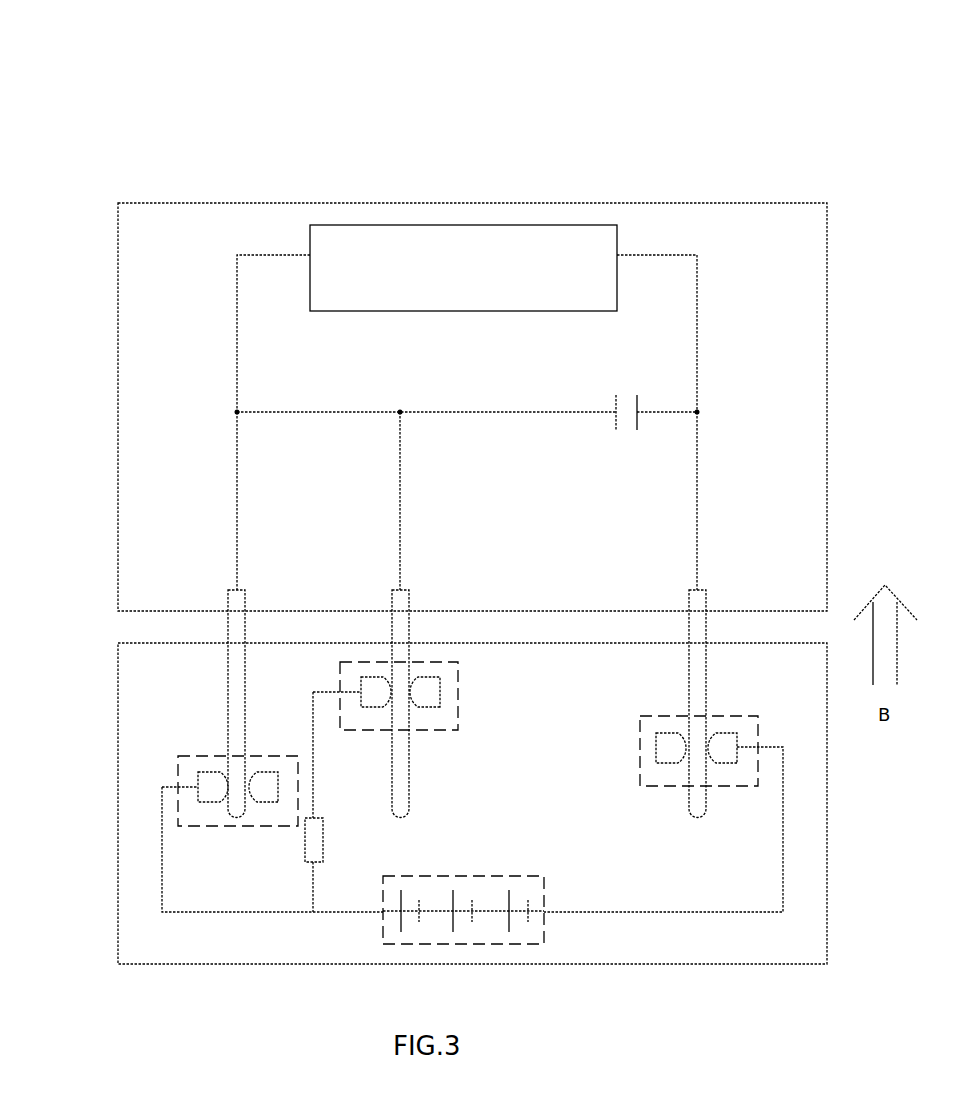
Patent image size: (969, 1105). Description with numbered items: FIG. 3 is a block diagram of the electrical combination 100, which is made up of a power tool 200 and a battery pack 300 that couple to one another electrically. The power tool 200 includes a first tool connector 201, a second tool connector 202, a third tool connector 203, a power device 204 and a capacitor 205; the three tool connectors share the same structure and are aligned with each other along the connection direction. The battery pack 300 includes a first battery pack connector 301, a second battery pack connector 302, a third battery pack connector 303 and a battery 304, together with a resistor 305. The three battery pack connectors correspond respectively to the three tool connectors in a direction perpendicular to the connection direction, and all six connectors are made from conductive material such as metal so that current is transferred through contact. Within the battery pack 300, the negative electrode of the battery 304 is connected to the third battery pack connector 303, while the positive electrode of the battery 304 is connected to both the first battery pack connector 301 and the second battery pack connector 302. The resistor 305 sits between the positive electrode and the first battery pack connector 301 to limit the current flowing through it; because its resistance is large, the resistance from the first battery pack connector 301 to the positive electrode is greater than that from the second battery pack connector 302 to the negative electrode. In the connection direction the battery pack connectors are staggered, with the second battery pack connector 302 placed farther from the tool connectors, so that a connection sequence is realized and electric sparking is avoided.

The electrical combination 100 is at (726, 90).
The power tool 200 is at (165, 278).
The first tool connector 201 is at (403, 602).
The second tool connector 202 is at (240, 602).
The third tool connector 203 is at (699, 602).
The power device 204 is at (463, 290).
The capacitor 205 is at (627, 432).
The battery pack 300 is at (157, 700).
The first battery pack connector 301 is at (445, 720).
The second battery pack connector 302 is at (215, 808).
The third battery pack connector 303 is at (743, 732).
The battery 304 is at (529, 890).
The resistor 305 is at (310, 847).